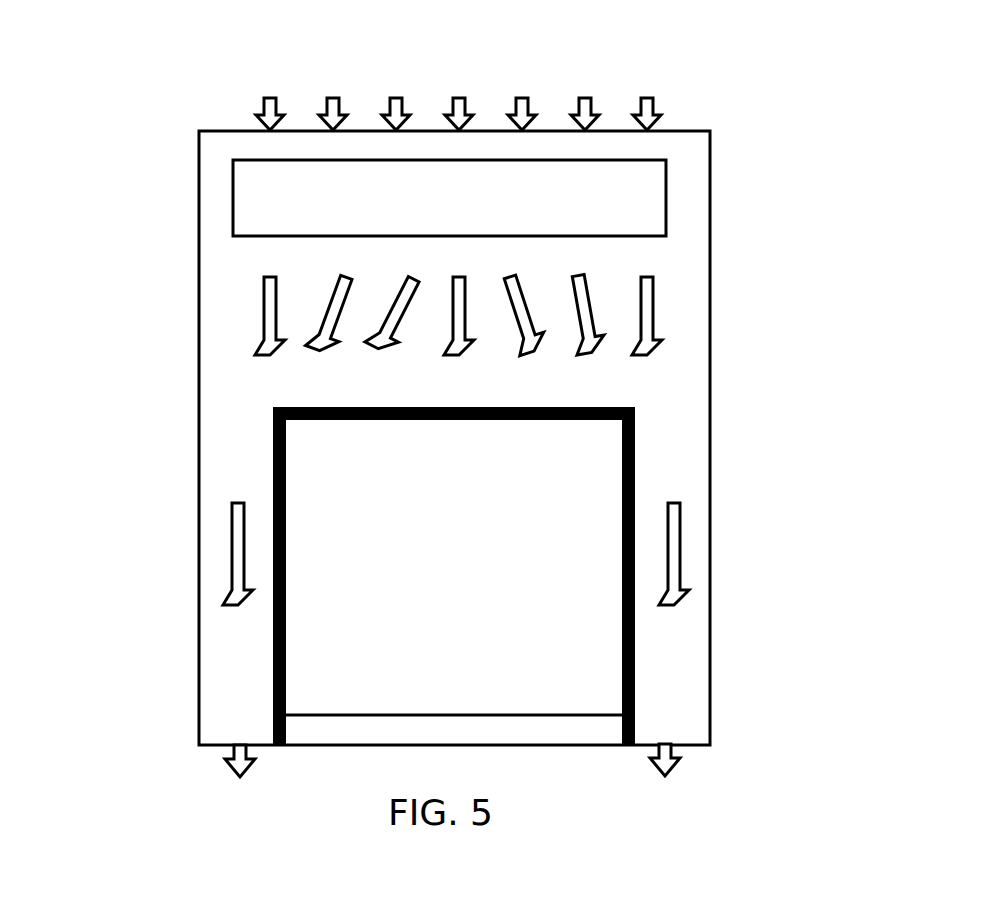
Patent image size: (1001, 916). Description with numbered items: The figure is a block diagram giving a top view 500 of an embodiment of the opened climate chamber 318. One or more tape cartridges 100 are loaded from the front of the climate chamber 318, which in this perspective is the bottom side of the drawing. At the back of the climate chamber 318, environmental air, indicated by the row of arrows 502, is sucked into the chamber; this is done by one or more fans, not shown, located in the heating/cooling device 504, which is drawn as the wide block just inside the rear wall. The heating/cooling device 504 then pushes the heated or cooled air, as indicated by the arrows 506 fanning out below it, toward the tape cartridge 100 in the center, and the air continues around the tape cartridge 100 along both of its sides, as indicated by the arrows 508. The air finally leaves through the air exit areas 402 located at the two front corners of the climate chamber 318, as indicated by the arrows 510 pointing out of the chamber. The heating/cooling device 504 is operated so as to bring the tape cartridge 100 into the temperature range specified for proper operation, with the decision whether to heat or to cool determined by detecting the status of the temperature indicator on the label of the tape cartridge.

The top view 500 is at (122, 56).
The arrows indicating environmental air 502 is at (673, 99).
The heating/cooling device 504 is at (475, 213).
The arrows indicating pushed air 506 is at (666, 295).
The climate chamber 318 is at (195, 362).
The tape cartridge 100 is at (462, 582).
The arrows indicating air pushed around the cartridge 508 is at (224, 542).
The air exit areas 402 is at (227, 739).
The arrows indicating exiting air 510 is at (224, 784).